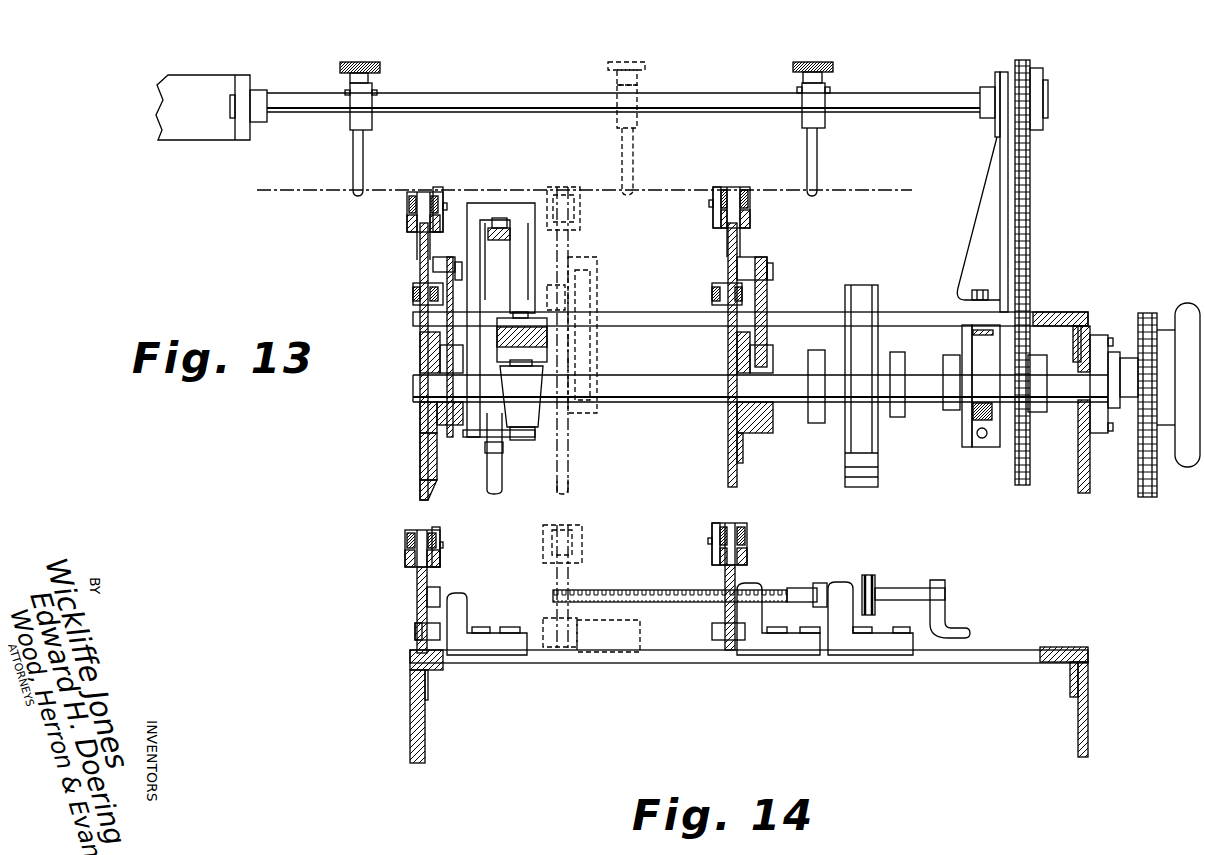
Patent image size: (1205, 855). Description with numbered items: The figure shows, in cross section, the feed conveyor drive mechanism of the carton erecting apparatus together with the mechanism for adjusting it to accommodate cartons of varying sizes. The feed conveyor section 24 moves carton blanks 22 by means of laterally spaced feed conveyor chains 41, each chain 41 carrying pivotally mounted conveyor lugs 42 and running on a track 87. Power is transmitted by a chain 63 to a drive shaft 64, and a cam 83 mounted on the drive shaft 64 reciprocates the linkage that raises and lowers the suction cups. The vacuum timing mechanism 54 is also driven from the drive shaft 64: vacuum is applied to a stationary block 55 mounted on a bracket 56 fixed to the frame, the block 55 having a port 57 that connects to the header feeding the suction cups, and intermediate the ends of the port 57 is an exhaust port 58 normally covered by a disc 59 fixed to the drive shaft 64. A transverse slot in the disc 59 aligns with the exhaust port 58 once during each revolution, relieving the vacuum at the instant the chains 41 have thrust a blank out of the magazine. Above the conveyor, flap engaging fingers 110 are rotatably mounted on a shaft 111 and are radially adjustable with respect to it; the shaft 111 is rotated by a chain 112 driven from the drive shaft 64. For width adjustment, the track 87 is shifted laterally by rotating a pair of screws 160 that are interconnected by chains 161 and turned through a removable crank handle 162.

In FIG. 13, the carton blanks 22 is at (510, 185).
In FIG. 13, the feed conveyor section 24 is at (386, 261).
In FIG. 14, the feed conveyor section 24 is at (360, 605).
In FIG. 13, the feed conveyor chain 41 is at (408, 205).
In FIG. 14, the feed conveyor chain 41 is at (415, 637).
In FIG. 13, the conveyor lug 42 is at (440, 188).
In FIG. 14, the conveyor lug 42 is at (440, 533).
In FIG. 13, the vacuum timing mechanism 54 is at (982, 460).
In FIG. 13, the stationary block 55 is at (990, 448).
In FIG. 13, the bracket 56 is at (1002, 440).
In FIG. 13, the port 57 is at (975, 445).
In FIG. 13, the exhaust port 58 is at (948, 440).
In FIG. 13, the disc 59 is at (965, 407).
In FIG. 13, the chain 63 is at (1153, 494).
In FIG. 13, the drive shaft 64 is at (667, 388).
In FIG. 13, the cam 83 is at (860, 487).
In FIG. 13, the track 87 is at (418, 260).
In FIG. 13, the flap engaging fingers 110 is at (360, 158).
In FIG. 13, the shaft 111 is at (883, 97).
In FIG. 13, the chain 112 is at (1028, 170).
In FIG. 14, the screws 160 is at (633, 590).
In FIG. 14, the chains 161 is at (877, 575).
In FIG. 14, the removable crank handle 162 is at (943, 618).